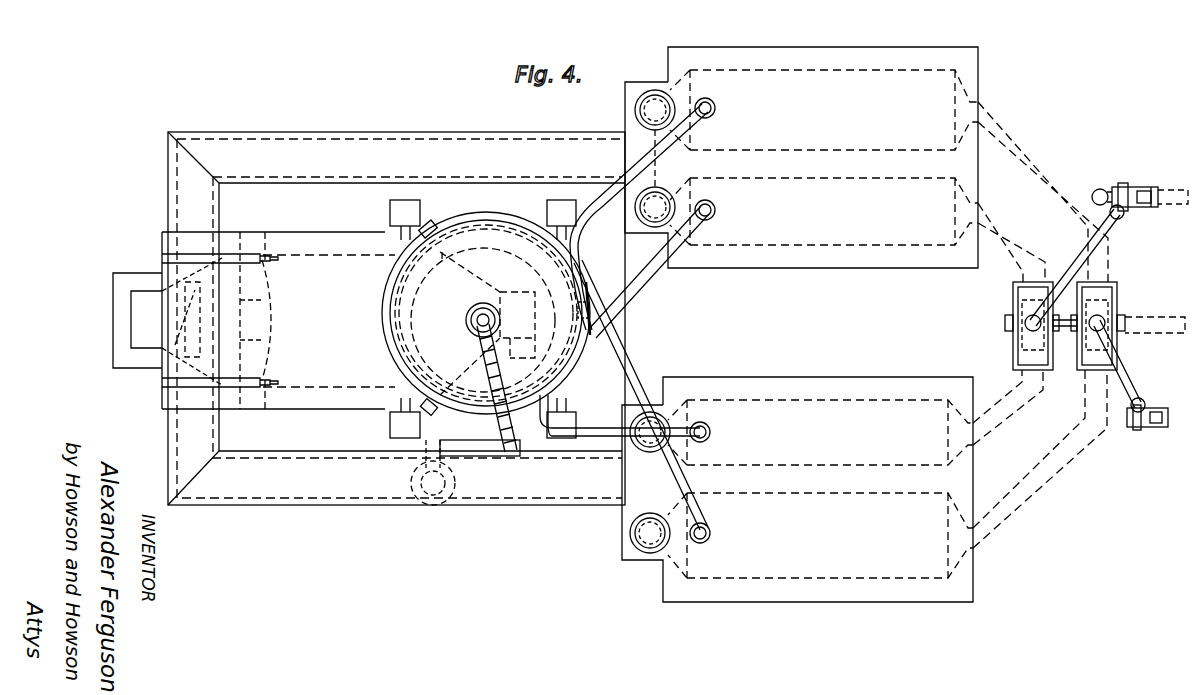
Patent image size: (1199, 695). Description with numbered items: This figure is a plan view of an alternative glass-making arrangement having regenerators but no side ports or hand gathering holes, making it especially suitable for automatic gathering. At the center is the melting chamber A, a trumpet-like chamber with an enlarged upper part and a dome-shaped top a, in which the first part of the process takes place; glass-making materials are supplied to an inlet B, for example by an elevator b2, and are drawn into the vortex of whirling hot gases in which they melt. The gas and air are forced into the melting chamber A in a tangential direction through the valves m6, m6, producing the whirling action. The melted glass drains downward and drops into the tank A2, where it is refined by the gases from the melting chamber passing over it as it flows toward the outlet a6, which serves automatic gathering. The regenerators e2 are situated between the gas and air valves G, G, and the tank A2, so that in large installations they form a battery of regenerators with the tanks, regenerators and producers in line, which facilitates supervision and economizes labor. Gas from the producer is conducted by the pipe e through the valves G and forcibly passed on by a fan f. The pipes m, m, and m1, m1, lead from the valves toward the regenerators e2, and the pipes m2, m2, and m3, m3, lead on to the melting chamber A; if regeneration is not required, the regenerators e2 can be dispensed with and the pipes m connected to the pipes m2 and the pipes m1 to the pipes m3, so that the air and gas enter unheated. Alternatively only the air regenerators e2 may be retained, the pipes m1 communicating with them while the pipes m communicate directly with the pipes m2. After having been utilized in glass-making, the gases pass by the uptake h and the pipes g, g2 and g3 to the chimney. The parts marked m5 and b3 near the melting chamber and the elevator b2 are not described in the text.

The pipe g is at (190, 206).
The pipe g2 is at (285, 512).
The tank A2 is at (278, 320).
The outlet a6 is at (156, 320).
The uptake h is at (175, 362).
The melting chamber A is at (486, 313).
The dome-shaped top a is at (483, 321).
The inlet B is at (470, 316).
The ring m5 is at (383, 322).
The valve m6 is at (442, 212).
The elevator b2 is at (484, 458).
The crank pin b3 is at (412, 483).
The regenerator e2 is at (800, 324).
The pipe m3 is at (588, 214).
The pipe m2 is at (648, 292).
The pipe m1 is at (1038, 160).
The pipe m is at (1005, 235).
The gas and air valve G is at (1013, 302).
The pipe g3 is at (1165, 333).
The fan f is at (1126, 220).
The pipe e is at (1172, 205).